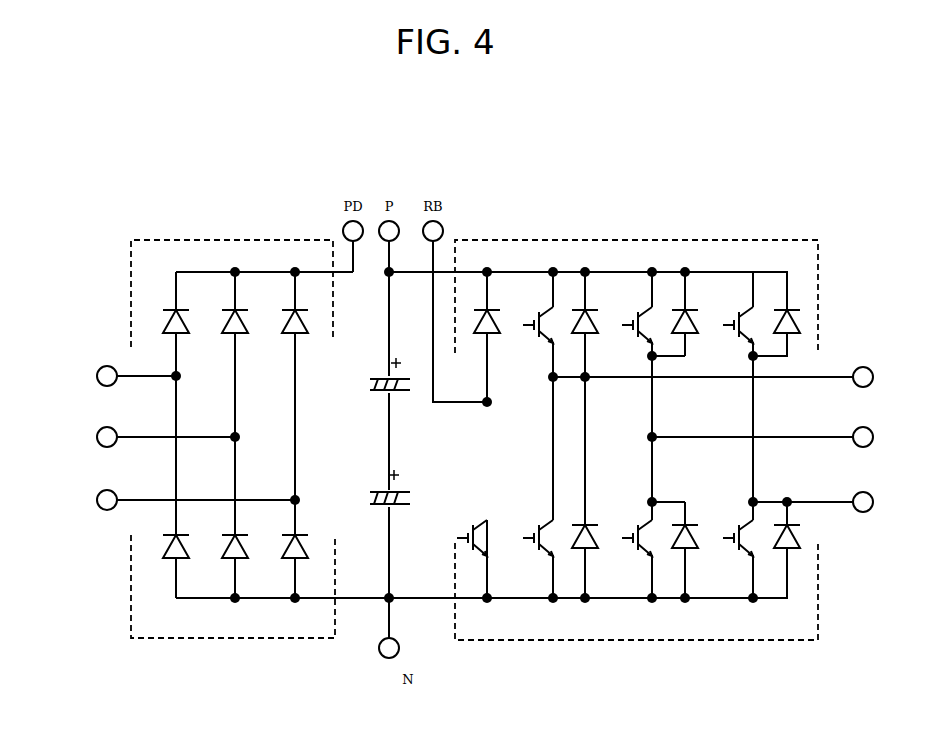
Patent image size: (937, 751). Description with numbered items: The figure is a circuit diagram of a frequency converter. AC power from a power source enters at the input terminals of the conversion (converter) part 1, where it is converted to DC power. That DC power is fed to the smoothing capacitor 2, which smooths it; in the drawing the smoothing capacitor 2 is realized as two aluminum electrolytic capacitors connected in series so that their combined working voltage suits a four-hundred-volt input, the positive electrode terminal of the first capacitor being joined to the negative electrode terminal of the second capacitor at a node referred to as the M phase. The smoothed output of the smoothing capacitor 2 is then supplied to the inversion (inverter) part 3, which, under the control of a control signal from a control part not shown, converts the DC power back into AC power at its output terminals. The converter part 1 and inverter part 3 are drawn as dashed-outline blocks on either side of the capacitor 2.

The conversion (converter) part 1 is at (155, 245).
The smoothing capacitor 2 is at (383, 503).
The inversion (inverter) part 3 is at (537, 242).